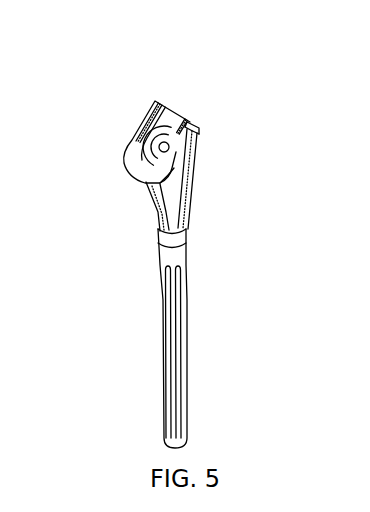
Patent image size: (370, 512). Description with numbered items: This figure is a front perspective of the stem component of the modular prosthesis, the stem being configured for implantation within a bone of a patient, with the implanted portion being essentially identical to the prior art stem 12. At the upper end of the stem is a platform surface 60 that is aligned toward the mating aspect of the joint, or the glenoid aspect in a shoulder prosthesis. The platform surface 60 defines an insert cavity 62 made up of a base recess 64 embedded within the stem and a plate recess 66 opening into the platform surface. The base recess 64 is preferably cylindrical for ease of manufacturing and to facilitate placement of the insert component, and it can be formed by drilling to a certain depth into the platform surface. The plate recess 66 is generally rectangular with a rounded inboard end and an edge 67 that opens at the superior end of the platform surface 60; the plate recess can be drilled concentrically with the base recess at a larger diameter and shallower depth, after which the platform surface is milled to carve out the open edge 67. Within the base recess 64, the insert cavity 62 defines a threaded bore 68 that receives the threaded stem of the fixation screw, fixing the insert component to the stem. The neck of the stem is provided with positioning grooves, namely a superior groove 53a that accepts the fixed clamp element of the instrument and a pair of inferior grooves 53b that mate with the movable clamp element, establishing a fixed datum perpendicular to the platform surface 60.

The prior art stem 12 is at (186, 254).
The superior groove 53a is at (198, 129).
The inferior grooves 53b is at (157, 199).
The platform surface 60 is at (135, 165).
The insert cavity 62 is at (163, 120).
The base recess 64 is at (152, 108).
The plate recess 66 is at (128, 150).
The edge 67 is at (177, 115).
The threaded bore 68 is at (190, 154).